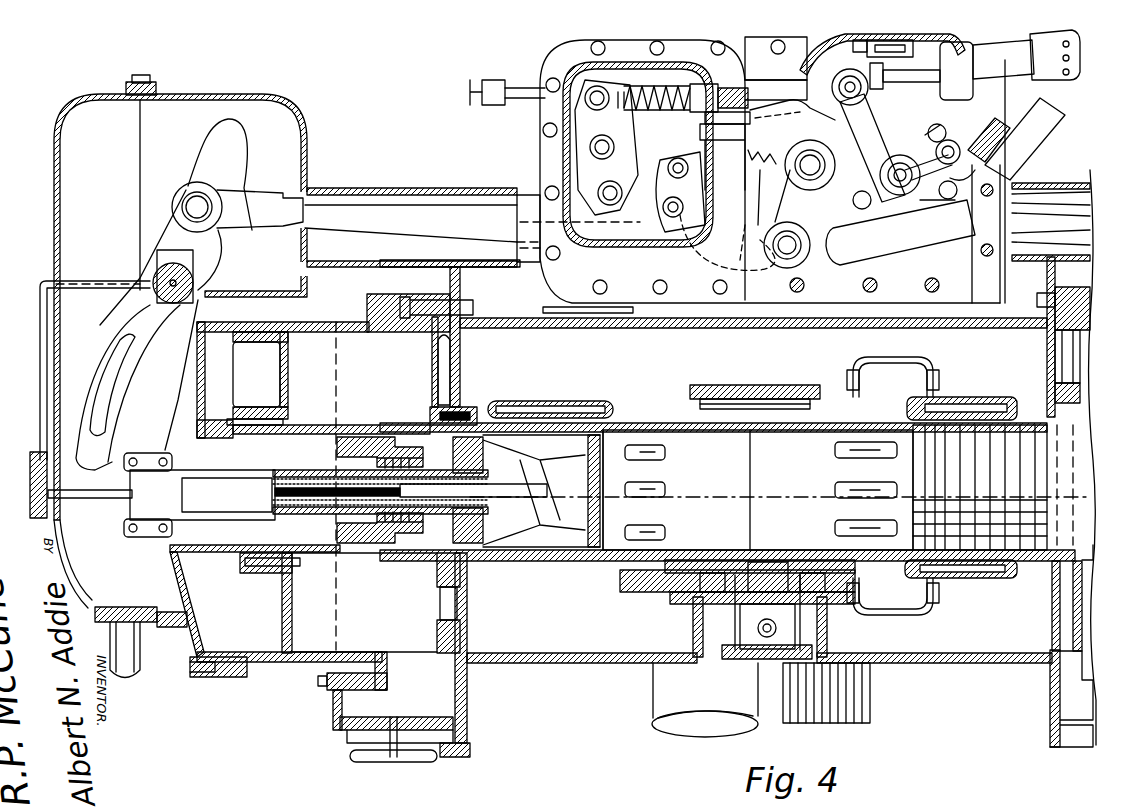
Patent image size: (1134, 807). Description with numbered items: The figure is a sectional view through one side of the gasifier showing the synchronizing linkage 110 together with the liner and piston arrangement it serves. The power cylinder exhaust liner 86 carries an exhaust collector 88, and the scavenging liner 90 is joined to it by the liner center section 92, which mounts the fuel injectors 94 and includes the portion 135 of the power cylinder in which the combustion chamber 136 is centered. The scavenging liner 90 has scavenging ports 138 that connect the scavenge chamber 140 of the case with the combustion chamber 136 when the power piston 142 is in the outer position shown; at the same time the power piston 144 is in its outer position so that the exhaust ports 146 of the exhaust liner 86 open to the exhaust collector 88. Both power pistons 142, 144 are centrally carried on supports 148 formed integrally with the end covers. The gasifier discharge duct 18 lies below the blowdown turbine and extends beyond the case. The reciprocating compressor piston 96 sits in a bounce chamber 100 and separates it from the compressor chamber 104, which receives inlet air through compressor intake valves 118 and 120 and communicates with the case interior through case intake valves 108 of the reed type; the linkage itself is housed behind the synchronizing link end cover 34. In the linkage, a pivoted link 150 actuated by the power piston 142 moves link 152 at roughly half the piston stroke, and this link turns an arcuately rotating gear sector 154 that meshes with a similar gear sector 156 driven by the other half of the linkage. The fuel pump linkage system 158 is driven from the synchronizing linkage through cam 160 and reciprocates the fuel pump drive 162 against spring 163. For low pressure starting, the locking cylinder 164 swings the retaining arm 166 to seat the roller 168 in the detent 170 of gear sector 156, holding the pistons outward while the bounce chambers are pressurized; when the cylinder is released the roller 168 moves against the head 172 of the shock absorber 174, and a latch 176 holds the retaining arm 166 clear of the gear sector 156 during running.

The gasifier discharge duct 18 is at (651, 668).
The synchronizing link end cover 34 is at (55, 215).
The power cylinder exhaust liner 86 is at (950, 400).
The exhaust collector 88 is at (896, 366).
The scavenging liner 90 is at (580, 404).
The liner center section 92 is at (783, 376).
The fuel injector 94 is at (760, 652).
The reciprocating compressor piston 96 is at (292, 587).
The bounce chamber 100 is at (200, 642).
The compressor chamber 104 is at (303, 640).
The case intake valve 108 is at (462, 600).
The synchronizing linkage 110 is at (196, 172).
The compressor intake valve 118 is at (400, 673).
The compressor intake valve 120 is at (1053, 677).
The portion of the power cylinder 135 is at (752, 430).
The combustion chamber 136 is at (678, 580).
The scavenging ports 138 is at (666, 488).
The scavenge chamber 140 is at (545, 664).
The power piston 142 is at (588, 480).
The power piston 144 is at (900, 428).
The exhaust ports 146 is at (835, 524).
The support 148 is at (353, 557).
The pivoted link 150 is at (118, 372).
The link 152 is at (314, 224).
The gear sector 154 is at (760, 205).
The gear sector 156 is at (945, 168).
The fuel pump linkage system 158 is at (565, 160).
The cam 160 is at (680, 178).
The fuel pump drive 162 is at (626, 92).
The spring 163 is at (692, 94).
The locking cylinder 164 is at (1020, 133).
The retaining arm 166 is at (838, 217).
The roller 168 is at (852, 68).
The detent 170 is at (796, 145).
The head 172 is at (890, 82).
The shock absorber 174 is at (1057, 78).
The latch 176 is at (884, 40).